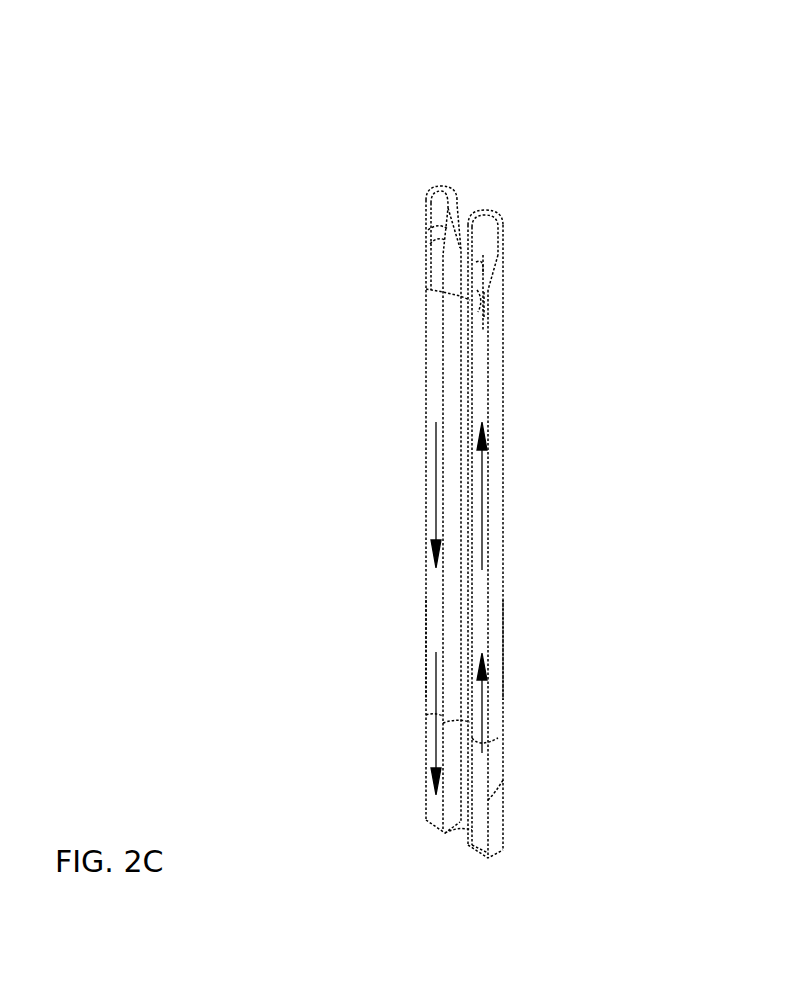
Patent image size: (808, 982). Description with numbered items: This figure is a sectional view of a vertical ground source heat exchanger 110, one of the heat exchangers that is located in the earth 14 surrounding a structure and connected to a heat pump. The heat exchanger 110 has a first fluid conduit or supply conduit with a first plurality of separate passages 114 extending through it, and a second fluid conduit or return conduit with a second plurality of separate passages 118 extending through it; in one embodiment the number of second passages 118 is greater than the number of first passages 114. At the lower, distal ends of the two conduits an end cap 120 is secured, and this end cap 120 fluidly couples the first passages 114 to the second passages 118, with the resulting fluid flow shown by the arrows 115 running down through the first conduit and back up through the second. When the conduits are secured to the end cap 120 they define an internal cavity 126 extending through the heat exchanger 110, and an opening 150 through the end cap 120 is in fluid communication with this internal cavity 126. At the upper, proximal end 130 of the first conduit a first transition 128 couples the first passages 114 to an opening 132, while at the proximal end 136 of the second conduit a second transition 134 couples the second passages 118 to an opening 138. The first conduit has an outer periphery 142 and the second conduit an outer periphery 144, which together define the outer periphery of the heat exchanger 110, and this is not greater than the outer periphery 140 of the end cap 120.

The vertical heat exchanger 110 is at (467, 102).
The first plurality of separate passages 114 is at (432, 415).
The arrows 115 is at (436, 495).
The second plurality of separate passages 118 is at (485, 292).
The end cap 120 is at (535, 790).
The internal cavity 126 is at (440, 721).
The first transition 128 is at (430, 242).
The proximal end of the first fluid conduit 130 is at (428, 287).
The opening of the first transition 132 is at (426, 188).
The second transition 134 is at (503, 264).
The proximal end of the second fluid conduit 136 is at (490, 323).
The opening of the second transition 138 is at (500, 213).
The outer periphery of the end cap 140 is at (440, 717).
The outer periphery of the first fluid conduit 142 is at (428, 633).
The outer periphery of the second fluid conduit 144 is at (502, 633).
The opening of the end cap 150 is at (461, 808).
The earth 14 is at (807, 550).